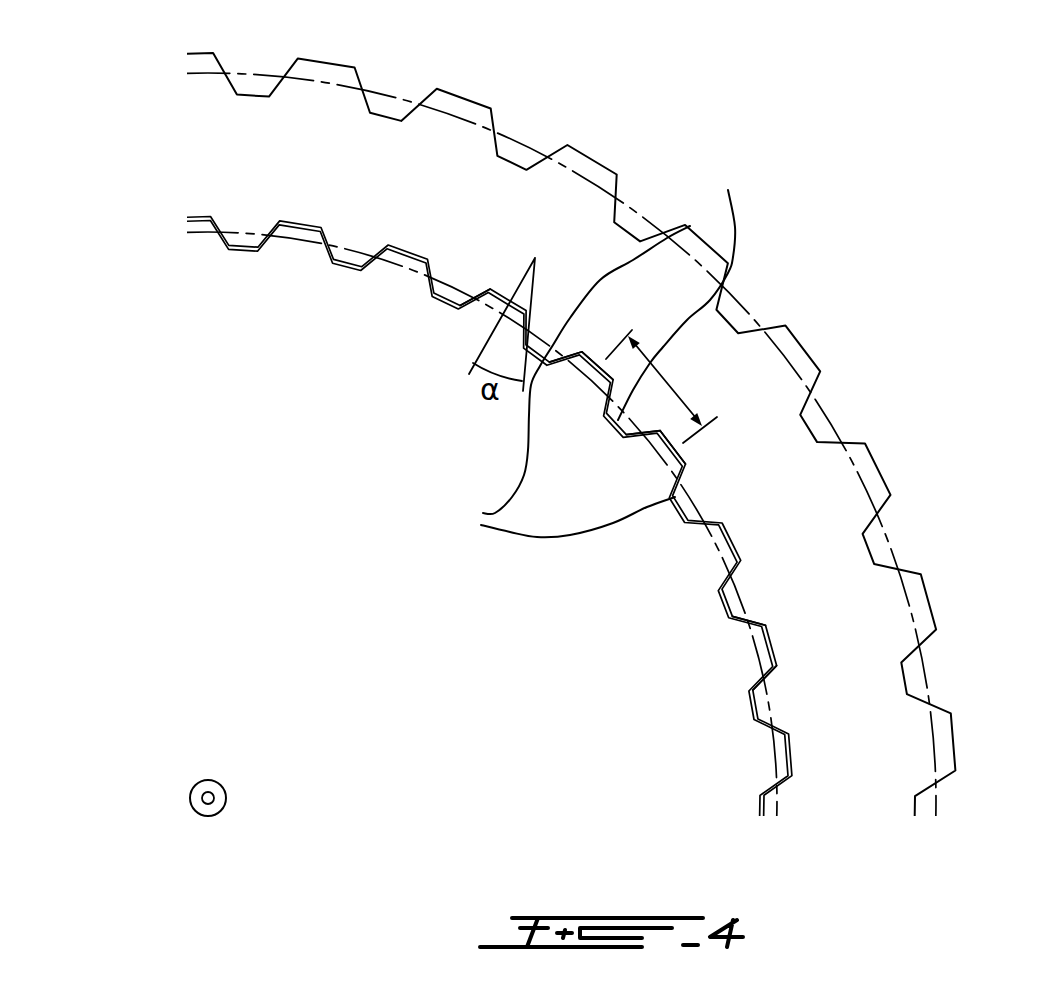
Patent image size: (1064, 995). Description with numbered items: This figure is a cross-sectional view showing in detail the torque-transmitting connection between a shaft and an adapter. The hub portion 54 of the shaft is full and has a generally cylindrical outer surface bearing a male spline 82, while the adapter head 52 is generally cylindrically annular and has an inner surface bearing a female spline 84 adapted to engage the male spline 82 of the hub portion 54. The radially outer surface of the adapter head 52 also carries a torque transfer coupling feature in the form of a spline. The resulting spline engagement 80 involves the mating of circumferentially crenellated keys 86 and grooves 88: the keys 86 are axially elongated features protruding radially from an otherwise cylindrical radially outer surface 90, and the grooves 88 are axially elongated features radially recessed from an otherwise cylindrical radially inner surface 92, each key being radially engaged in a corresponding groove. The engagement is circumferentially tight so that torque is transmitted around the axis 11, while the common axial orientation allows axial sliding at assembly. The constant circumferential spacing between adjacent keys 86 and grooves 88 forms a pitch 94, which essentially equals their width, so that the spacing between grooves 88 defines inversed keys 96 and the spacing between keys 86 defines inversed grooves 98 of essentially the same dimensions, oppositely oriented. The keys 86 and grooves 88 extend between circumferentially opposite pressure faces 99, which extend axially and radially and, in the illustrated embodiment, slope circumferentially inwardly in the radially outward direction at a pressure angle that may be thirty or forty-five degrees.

The axis 11 is at (208, 781).
The adapter head 52 is at (441, 199).
The hub portion 54 is at (292, 452).
The spline engagement 80 is at (678, 740).
The male spline 82 is at (700, 560).
The female spline 84 is at (712, 477).
The keys 86 is at (482, 313).
The grooves 88 is at (587, 350).
The radially outer surface 90 is at (680, 520).
The radially inner surface 92 is at (680, 493).
The pitch 94 is at (670, 377).
The inversed keys 96 is at (692, 230).
The inversed grooves 98 is at (573, 381).
The pressure faces 99 is at (750, 622).